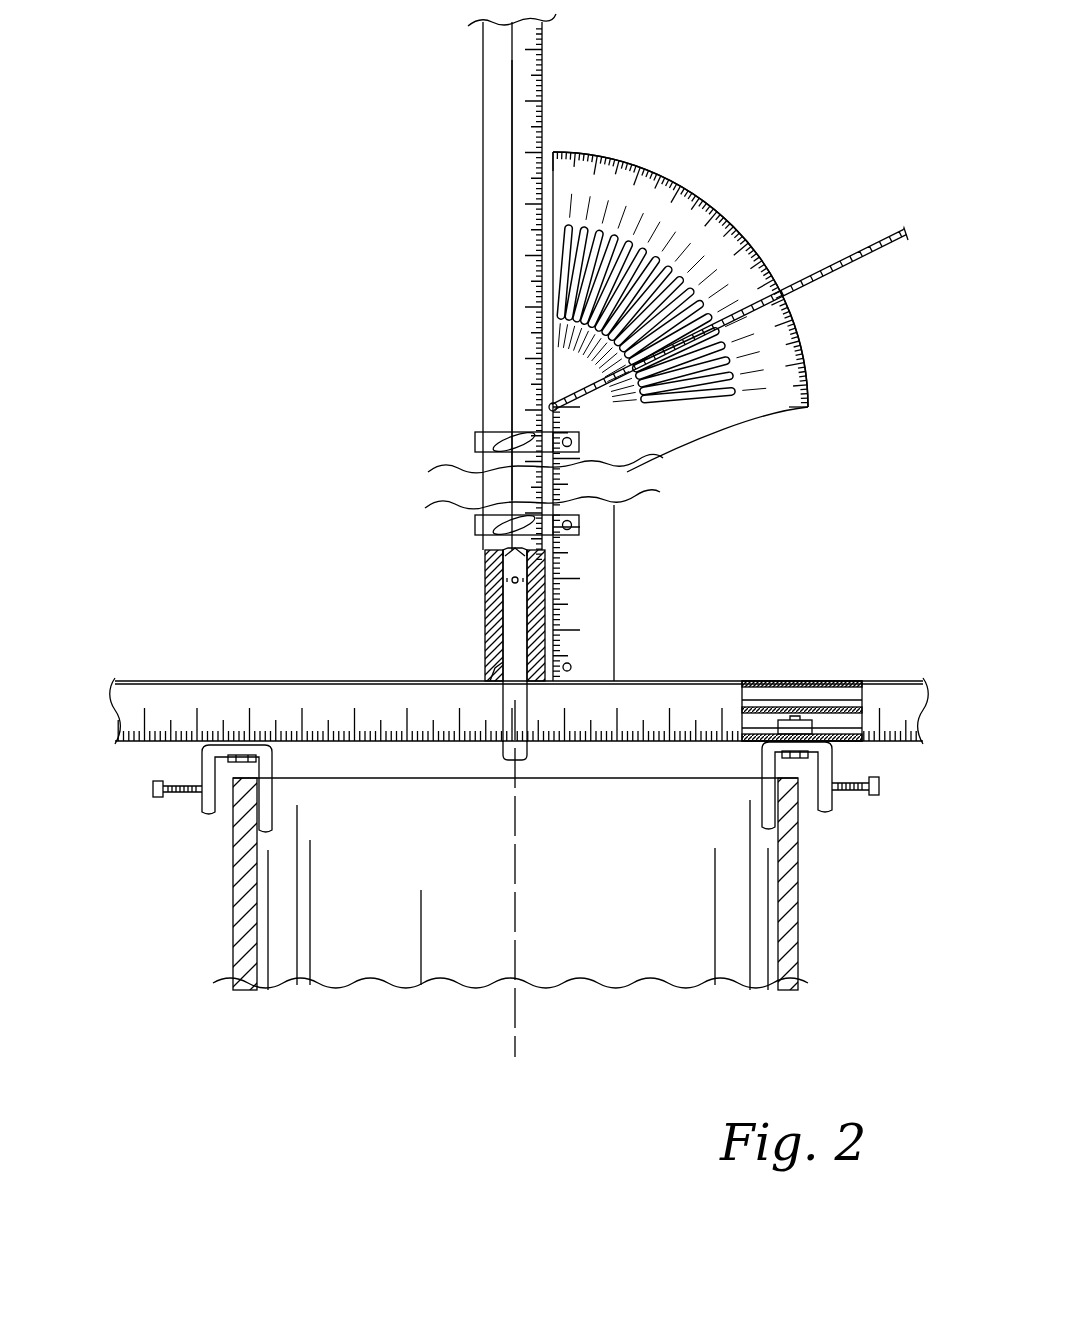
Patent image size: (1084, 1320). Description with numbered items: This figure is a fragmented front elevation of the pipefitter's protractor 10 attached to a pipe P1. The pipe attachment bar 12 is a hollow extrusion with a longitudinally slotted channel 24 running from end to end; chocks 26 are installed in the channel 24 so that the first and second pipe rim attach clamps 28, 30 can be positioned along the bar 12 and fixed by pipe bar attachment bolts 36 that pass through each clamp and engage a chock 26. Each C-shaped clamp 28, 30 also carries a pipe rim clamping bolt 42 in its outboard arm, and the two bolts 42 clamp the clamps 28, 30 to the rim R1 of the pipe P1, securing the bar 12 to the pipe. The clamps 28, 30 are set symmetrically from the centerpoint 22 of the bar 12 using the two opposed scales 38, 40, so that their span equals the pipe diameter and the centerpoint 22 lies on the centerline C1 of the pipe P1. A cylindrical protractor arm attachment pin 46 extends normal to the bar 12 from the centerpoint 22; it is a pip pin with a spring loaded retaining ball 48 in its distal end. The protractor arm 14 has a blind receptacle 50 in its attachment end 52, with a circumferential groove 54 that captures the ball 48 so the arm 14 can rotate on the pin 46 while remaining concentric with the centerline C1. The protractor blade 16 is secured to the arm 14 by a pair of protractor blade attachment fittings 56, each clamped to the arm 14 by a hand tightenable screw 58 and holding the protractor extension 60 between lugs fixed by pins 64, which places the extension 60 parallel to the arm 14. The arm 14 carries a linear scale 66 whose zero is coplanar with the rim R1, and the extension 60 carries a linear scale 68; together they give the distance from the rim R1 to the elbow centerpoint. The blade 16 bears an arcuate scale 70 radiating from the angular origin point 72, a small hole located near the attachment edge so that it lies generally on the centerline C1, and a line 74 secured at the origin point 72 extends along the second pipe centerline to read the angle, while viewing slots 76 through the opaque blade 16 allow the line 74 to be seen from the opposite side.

The pipefitter's protractor 10 is at (318, 392).
The pipe attachment bar 12 is at (227, 682).
The protractor arm 14 is at (483, 253).
The protractor blade 16 is at (707, 197).
The centerpoint 22 is at (512, 760).
The longitudinally slotted channel 24 is at (755, 700).
The chock 26 is at (810, 722).
The first pipe rim attach clamp 28 is at (205, 812).
The second pipe rim attach clamp 30 is at (822, 810).
The pipe bar attachment bolt 36 is at (240, 762).
The scale 38 is at (323, 712).
The scale 40 is at (686, 682).
The pipe rim clamping bolt 42 is at (153, 789).
The protractor arm attachment pin 46 is at (500, 612).
The spring loaded retaining ball 48 is at (485, 553).
The blind receptacle 50 is at (515, 668).
The attachment end 52 is at (490, 682).
The circumferential groove 54 is at (492, 581).
The protractor blade attachment fitting 56 is at (585, 447).
The hand tightenable screw 58 is at (500, 442).
The protractor extension 60 is at (614, 560).
The pin 64 is at (575, 441).
The linear scale 66 is at (518, 128).
The linear scale 68 is at (573, 593).
The arcuate scale 70 is at (735, 255).
The angular origin point 72 is at (550, 405).
The line 74 is at (848, 272).
The viewing slot 76 is at (730, 385).
The centerline C1 is at (512, 73).
The rim R1 is at (393, 780).
The pipe P1 is at (600, 955).